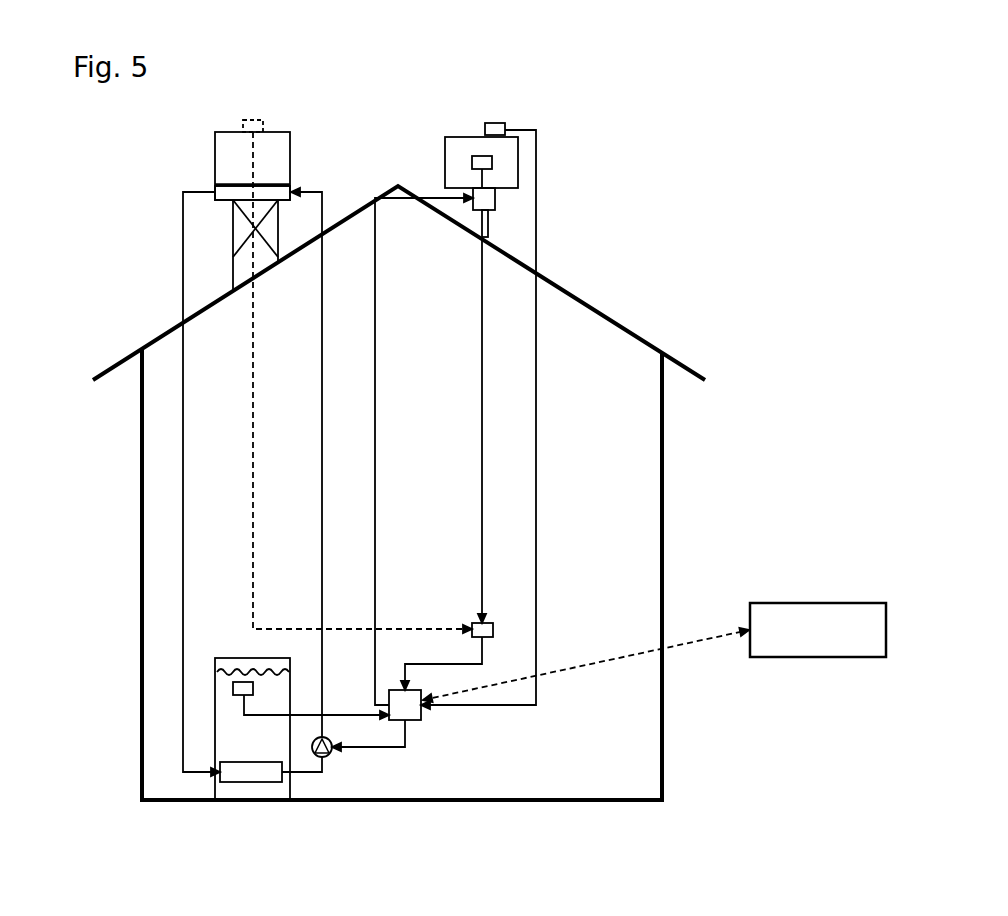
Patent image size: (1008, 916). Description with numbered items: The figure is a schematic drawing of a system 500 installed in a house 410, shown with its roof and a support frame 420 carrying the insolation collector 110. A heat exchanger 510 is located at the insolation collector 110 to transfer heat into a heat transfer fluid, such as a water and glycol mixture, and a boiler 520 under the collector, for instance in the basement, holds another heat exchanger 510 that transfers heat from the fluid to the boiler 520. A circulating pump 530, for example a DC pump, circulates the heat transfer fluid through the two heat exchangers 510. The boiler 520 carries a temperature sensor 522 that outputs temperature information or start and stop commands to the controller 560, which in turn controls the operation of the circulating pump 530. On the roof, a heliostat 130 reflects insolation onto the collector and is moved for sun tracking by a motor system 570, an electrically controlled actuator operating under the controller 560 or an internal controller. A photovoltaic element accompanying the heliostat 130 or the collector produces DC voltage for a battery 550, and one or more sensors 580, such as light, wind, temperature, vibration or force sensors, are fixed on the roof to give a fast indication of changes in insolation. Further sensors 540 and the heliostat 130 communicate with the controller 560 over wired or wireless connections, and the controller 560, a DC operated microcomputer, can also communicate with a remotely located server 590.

The insolation collector 110 is at (287, 151).
The heliostat 130 is at (522, 162).
The house 410 is at (419, 493).
The support frame 420 is at (195, 245).
The system 500 is at (138, 311).
The heat exchanger 510 is at (246, 491).
The boiler 520 is at (257, 772).
The temperature sensor 522 is at (164, 709).
The circulating pump 530 is at (365, 786).
The sensors 540 is at (421, 125).
The battery 550 is at (534, 609).
The controller 560 is at (445, 728).
The motor system 570 is at (541, 215).
The sensors 580 is at (532, 112).
The server 590 is at (818, 602).